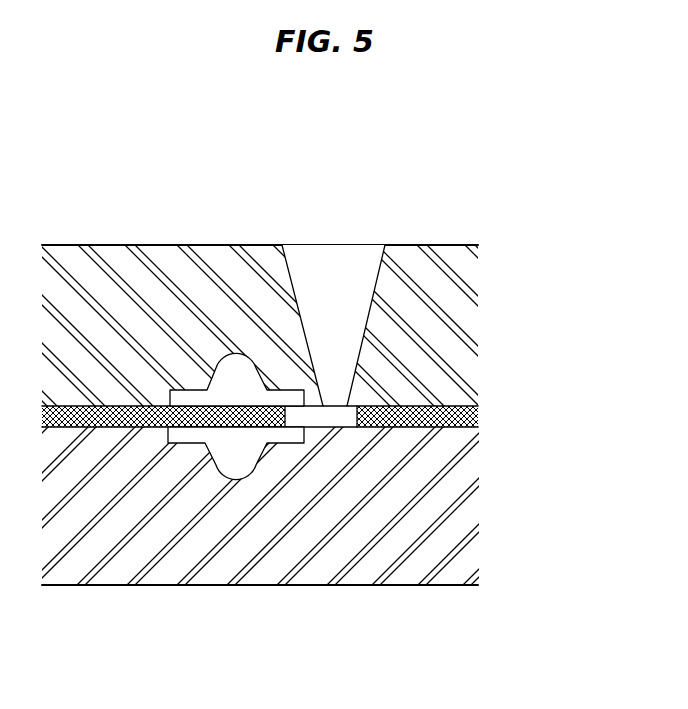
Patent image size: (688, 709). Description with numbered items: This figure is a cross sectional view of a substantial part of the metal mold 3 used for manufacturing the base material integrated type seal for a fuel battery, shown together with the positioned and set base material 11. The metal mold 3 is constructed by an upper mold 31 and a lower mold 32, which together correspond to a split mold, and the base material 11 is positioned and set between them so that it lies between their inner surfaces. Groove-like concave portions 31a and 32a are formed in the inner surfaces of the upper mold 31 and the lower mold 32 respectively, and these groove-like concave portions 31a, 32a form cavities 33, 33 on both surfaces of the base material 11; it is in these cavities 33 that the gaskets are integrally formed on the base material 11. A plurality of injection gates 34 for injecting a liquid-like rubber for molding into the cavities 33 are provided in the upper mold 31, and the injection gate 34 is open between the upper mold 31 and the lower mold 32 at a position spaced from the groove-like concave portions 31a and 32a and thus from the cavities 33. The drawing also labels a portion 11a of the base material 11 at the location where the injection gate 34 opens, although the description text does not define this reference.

The metal mold 3 is at (234, 245).
The upper mold 31 is at (95, 283).
The groove-like concave portion 31a is at (252, 361).
The lower mold 32 is at (77, 563).
The groove-like concave portion 32a is at (224, 474).
The cavity 33 is at (230, 385).
The injection gate 34 is at (340, 283).
The base material 11 is at (473, 418).
The opening 11a is at (332, 420).